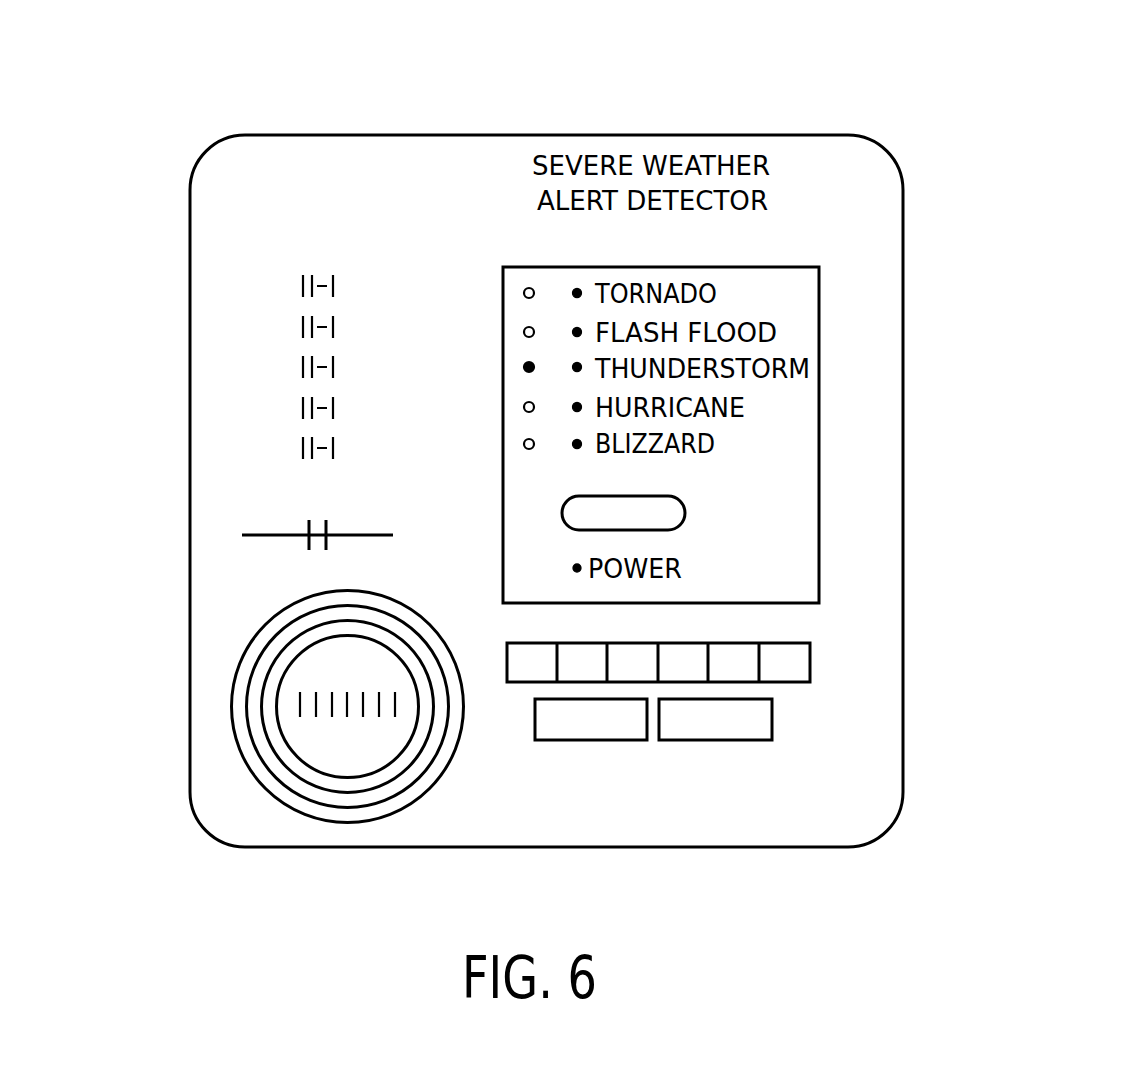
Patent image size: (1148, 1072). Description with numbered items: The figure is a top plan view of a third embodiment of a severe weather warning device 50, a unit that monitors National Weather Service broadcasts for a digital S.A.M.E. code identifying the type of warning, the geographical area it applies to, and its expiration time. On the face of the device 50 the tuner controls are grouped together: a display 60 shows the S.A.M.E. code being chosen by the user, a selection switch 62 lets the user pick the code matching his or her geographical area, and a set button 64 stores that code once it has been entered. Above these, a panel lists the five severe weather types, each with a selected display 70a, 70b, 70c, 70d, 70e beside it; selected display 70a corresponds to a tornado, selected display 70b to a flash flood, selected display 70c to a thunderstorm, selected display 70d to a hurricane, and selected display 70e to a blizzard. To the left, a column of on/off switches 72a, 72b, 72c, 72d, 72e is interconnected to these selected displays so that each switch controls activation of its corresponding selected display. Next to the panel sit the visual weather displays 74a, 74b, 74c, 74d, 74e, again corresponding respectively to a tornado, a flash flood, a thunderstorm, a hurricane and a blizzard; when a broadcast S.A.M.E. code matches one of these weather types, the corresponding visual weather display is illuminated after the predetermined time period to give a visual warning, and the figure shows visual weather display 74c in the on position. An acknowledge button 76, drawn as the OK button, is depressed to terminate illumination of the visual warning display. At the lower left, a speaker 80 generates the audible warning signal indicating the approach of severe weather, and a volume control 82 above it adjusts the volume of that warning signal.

The severe weather warning device 50 is at (784, 102).
The display 60 is at (813, 662).
The selection switch 62 is at (568, 741).
The set button 64 is at (717, 741).
The selected display 70a is at (580, 289).
The selected display 70b is at (575, 329).
The selected display 70c is at (573, 369).
The selected display 70d is at (575, 410).
The selected display 70e is at (580, 447).
The switch 72a is at (321, 266).
The switch 72b is at (325, 322).
The switch 72c is at (325, 362).
The switch 72d is at (325, 403).
The switch 72e is at (325, 443).
The visual weather display 74a is at (524, 292).
The visual weather display 74b is at (524, 332).
The visual weather display 74c is at (524, 367).
The visual weather display 74d is at (524, 407).
The visual weather display 74e is at (524, 445).
The acknowledge button 76 is at (677, 530).
The speaker 80 is at (405, 773).
The volume control 82 is at (307, 546).